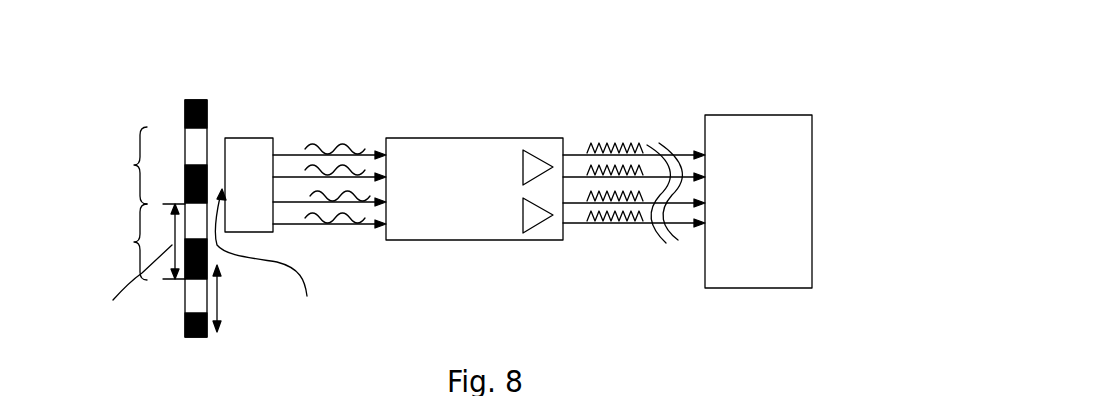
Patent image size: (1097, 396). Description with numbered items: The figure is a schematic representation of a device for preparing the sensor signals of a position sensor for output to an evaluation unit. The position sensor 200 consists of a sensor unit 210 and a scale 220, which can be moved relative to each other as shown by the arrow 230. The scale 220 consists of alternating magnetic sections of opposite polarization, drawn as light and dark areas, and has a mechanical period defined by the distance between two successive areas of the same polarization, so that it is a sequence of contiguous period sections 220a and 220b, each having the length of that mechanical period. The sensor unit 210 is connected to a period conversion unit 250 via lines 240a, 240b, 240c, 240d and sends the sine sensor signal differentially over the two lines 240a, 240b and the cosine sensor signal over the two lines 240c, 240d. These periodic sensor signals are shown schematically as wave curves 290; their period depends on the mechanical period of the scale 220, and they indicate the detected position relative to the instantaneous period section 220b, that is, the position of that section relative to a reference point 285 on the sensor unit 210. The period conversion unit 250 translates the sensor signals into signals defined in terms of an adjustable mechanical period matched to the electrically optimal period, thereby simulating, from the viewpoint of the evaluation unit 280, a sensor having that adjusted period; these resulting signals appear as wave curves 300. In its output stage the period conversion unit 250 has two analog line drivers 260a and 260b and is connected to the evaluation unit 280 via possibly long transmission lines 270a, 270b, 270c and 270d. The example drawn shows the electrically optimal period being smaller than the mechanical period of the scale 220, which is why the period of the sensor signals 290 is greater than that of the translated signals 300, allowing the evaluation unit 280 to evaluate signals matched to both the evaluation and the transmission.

The position sensor 200 is at (220, 112).
The sensor unit 210 is at (250, 138).
The scale 220 is at (185, 118).
The period section 220a is at (133, 165).
The period section 220b is at (133, 242).
The arrow 230 is at (250, 313).
The line 240a is at (278, 140).
The line 240b is at (297, 175).
The line 240c is at (289, 195).
The line 240d is at (281, 225).
The period conversion unit 250 is at (467, 138).
The analog line driver 260a is at (533, 150).
The analog line driver 260b is at (535, 228).
The transmission line 270a is at (643, 147).
The transmission line 270b is at (685, 175).
The transmission line 270c is at (652, 212).
The transmission line 270d is at (687, 226).
The evaluation unit 280 is at (773, 115).
The reference point 285 is at (275, 257).
The wave curves 290 is at (318, 150).
The wave curves 300 is at (602, 141).